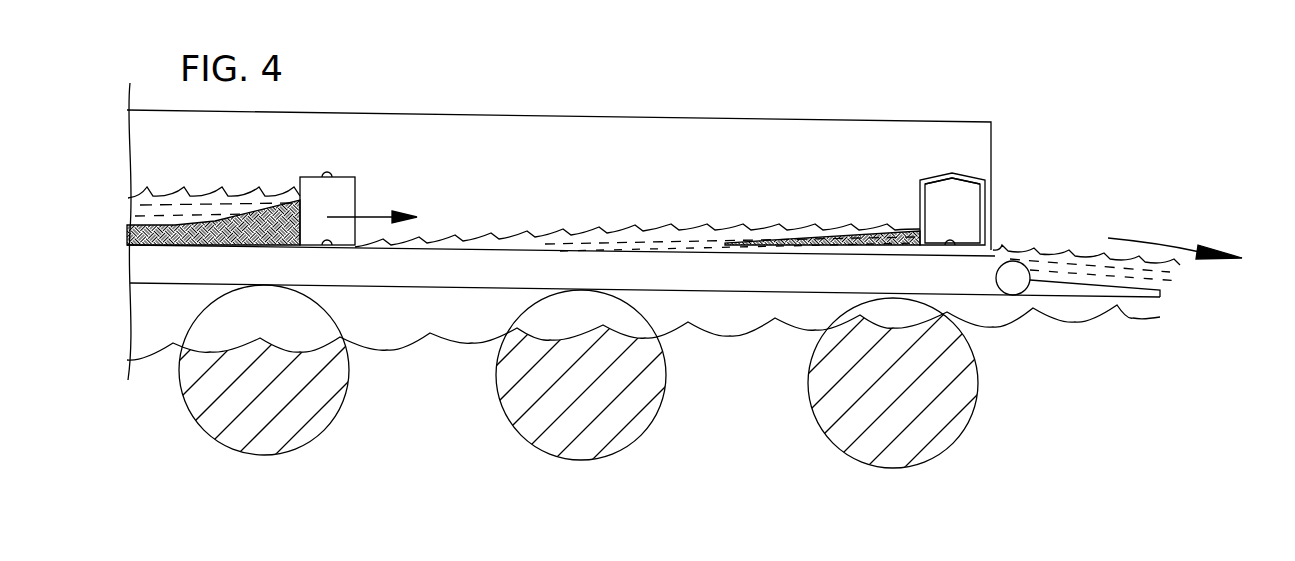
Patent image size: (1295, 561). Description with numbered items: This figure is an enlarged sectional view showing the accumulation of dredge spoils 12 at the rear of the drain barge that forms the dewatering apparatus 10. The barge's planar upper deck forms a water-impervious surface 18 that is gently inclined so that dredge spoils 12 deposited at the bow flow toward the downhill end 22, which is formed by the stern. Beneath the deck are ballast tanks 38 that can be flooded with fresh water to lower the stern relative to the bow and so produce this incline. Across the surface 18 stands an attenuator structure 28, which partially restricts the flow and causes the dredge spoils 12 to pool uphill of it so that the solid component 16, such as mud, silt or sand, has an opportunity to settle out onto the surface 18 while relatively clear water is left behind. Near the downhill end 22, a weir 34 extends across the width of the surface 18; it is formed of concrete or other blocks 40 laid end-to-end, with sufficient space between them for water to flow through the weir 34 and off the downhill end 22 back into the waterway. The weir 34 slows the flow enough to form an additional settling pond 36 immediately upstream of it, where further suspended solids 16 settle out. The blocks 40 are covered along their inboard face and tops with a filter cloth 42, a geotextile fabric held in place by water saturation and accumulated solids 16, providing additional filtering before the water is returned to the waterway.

The apparatus for dewatering dredge spoils 10 is at (532, 94).
The dredge spoils 12 is at (213, 197).
The solid component 16 is at (250, 207).
The surface 18 is at (478, 246).
The downhill end 22 is at (1067, 293).
The attenuator structure 28 is at (353, 180).
The weir 34 is at (957, 170).
The settling pond 36 is at (687, 189).
The ballast tanks 38 is at (333, 408).
The blocks 40 is at (967, 212).
The filter cloth 42 is at (985, 177).